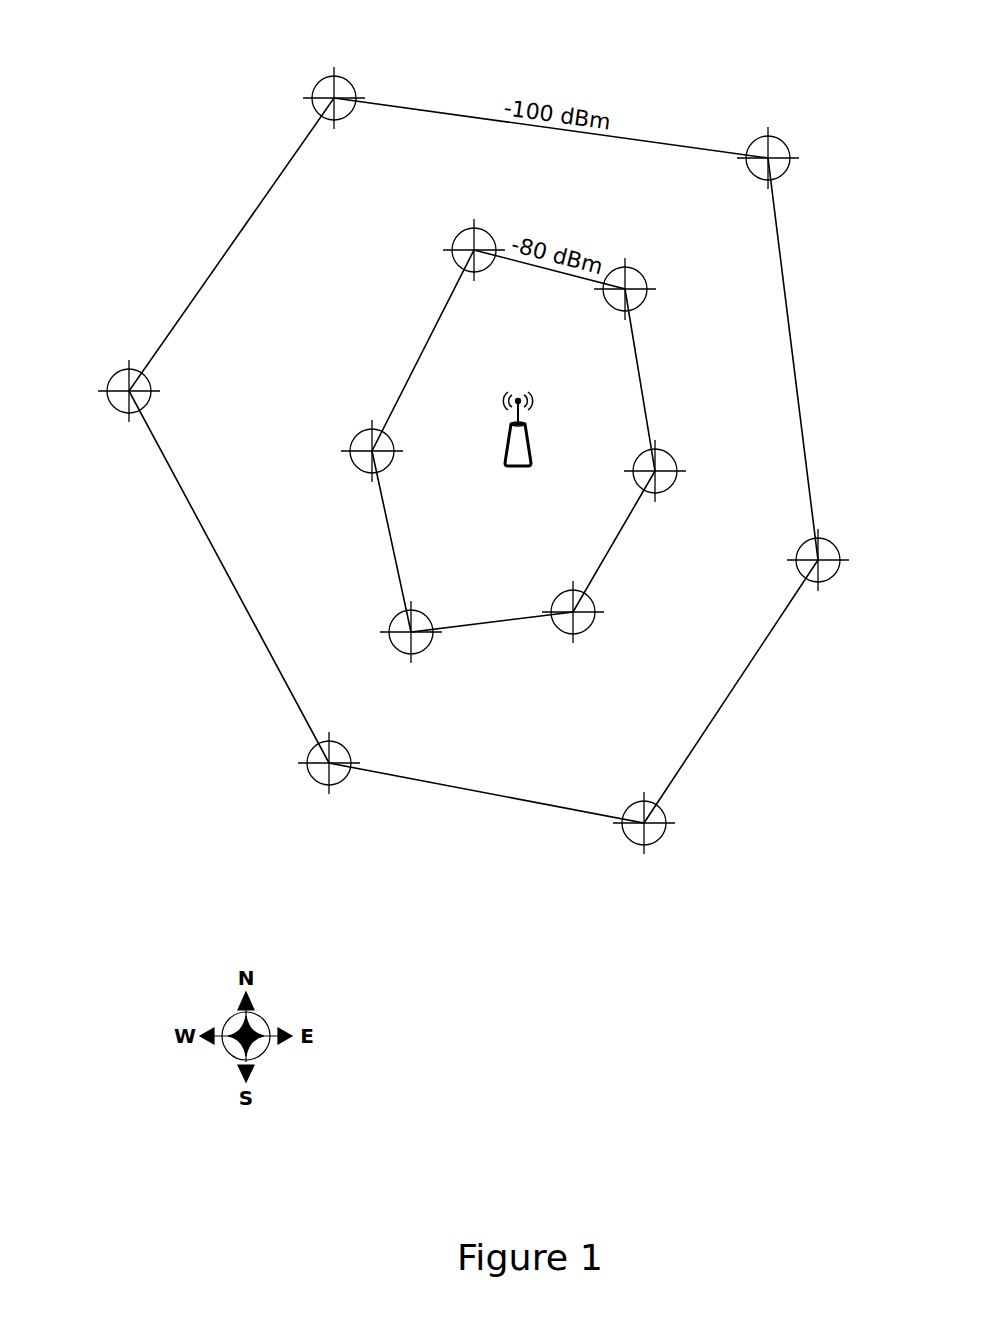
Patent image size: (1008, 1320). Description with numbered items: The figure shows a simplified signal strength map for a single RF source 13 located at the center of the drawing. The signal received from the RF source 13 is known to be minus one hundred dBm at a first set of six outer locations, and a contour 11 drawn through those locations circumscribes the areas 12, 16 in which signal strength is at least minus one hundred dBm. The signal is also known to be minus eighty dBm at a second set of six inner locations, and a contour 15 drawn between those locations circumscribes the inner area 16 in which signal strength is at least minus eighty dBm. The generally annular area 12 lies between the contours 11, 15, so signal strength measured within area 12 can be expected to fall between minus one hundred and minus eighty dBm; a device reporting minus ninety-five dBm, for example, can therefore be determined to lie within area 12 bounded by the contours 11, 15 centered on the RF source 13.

The contour 11 is at (222, 255).
The area 12 is at (287, 226).
The RF source 13 is at (505, 448).
The contour 15 is at (425, 347).
The area 16 is at (418, 535).